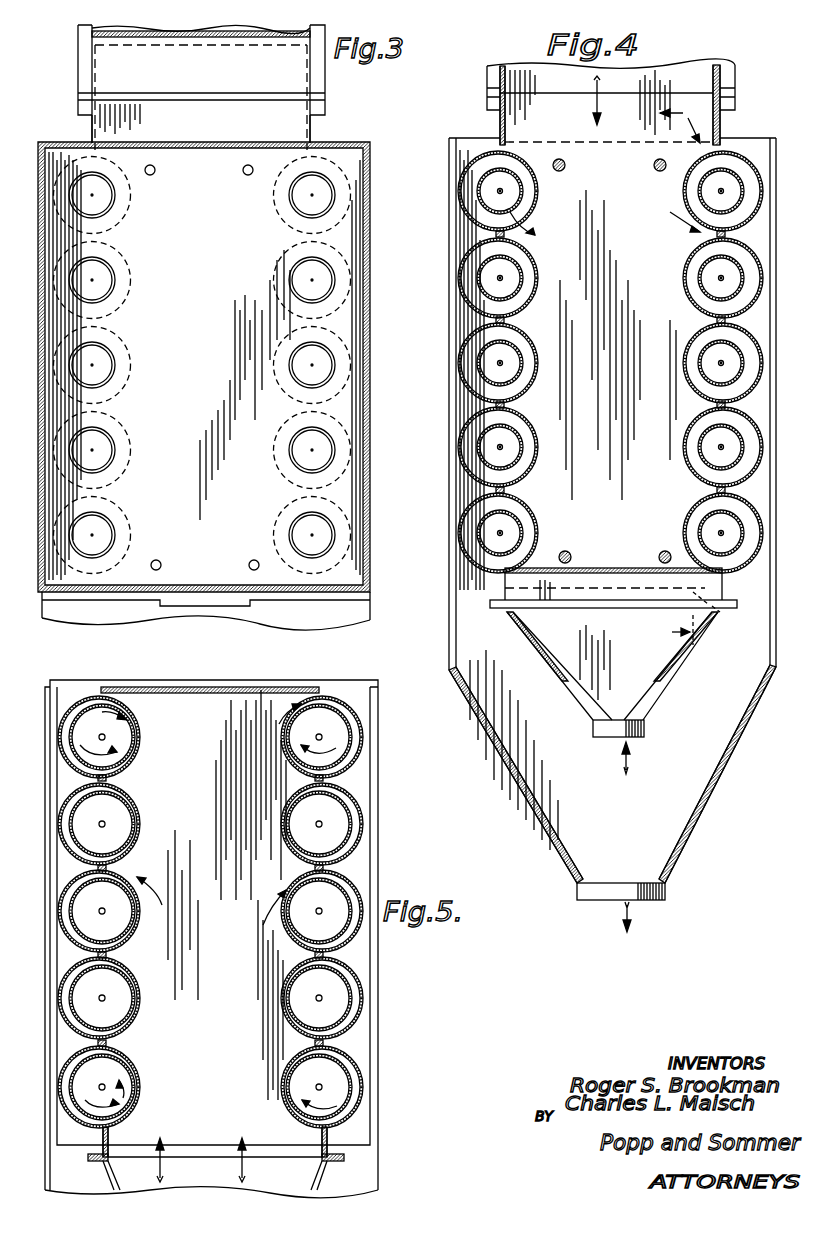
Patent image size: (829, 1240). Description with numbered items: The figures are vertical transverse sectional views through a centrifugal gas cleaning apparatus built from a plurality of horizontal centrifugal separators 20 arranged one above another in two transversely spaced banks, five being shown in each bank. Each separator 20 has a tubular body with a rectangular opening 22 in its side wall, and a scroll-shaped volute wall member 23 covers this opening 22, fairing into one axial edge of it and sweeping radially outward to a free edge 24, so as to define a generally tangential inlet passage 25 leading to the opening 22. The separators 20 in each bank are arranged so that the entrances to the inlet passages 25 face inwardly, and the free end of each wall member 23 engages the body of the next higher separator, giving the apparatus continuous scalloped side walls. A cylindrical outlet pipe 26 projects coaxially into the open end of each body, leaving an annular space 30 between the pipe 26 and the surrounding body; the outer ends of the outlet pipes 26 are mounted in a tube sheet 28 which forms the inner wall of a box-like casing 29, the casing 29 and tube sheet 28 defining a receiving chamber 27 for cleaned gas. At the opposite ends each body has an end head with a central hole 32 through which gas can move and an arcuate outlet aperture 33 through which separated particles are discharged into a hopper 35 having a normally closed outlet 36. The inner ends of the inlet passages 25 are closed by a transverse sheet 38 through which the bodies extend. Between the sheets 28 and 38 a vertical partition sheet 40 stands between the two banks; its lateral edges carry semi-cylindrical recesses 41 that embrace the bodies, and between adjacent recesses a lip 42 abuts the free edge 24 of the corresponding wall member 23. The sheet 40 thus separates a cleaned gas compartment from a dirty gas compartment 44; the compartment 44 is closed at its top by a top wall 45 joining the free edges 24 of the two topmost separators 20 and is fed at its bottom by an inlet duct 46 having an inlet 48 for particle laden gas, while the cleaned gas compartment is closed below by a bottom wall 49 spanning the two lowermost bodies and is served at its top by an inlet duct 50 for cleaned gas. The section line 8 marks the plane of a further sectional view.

In FIG. 4, the section line 8- 8 is at (687, 371).
In FIG. 5, the centrifugal separator 20 is at (287, 1106).
In FIG. 3, the rectangular opening 22 is at (312, 160).
In FIG. 4, the rectangular opening 22 is at (504, 234).
In FIG. 5, the rectangular opening 22 is at (104, 780).
In FIG. 3, the volute inlet wall member 23 is at (342, 167).
In FIG. 4, the volute inlet wall member 23 is at (726, 319).
In FIG. 5, the volute inlet wall member 23 is at (352, 785).
In FIG. 3, the free edge 24 is at (300, 330).
In FIG. 4, the free edge 24 is at (718, 334).
In FIG. 5, the free edge 24 is at (319, 954).
In FIG. 3, the tangential inlet passage 25 is at (345, 333).
In FIG. 4, the tangential inlet passage 25 is at (719, 234).
In FIG. 5, the tangential inlet passage 25 is at (104, 870).
In FIG. 3, the outlet pipe 26 is at (112, 440).
In FIG. 4, the outlet pipe 26 is at (504, 362).
In FIG. 3, the receiving chamber 27 is at (222, 152).
In FIG. 3, the tube sheet 28 is at (223, 455).
In FIG. 3, the box-like casing 29 is at (338, 146).
In FIG. 3, the annular space 30 is at (290, 375).
In FIG. 4, the central hole 32 is at (499, 364).
In FIG. 5, the central hole 32 is at (101, 825).
In FIG. 4, the arcuate outlet aperture 33 is at (459, 279).
In FIG. 5, the arcuate outlet aperture 33 is at (60, 916).
In FIG. 4, the hopper 35 is at (456, 638).
In FIG. 4, the hopper outlet 36 is at (667, 898).
In FIG. 4, the transverse sheet 38 is at (760, 594).
In FIG. 5, the transverse sheet 38 is at (211, 1051).
In FIG. 4, the partition sheet 40 is at (612, 404).
In FIG. 4, the semi-cylindrical recess 41 is at (697, 274).
In FIG. 4, the lip 42 is at (504, 321).
In FIG. 5, the dirty gas compartment 44 is at (248, 692).
In FIG. 5, the top wall 45 is at (205, 688).
In FIG. 4, the inlet duct 46 is at (612, 666).
In FIG. 5, the inlet duct 46 is at (216, 1158).
In FIG. 4, the inlet 48 is at (636, 740).
In FIG. 4, the bottom wall 49 is at (605, 568).
In FIG. 3, the cleaned gas inlet duct 50 is at (201, 87).
In FIG. 4, the cleaned gas inlet duct 50 is at (683, 110).